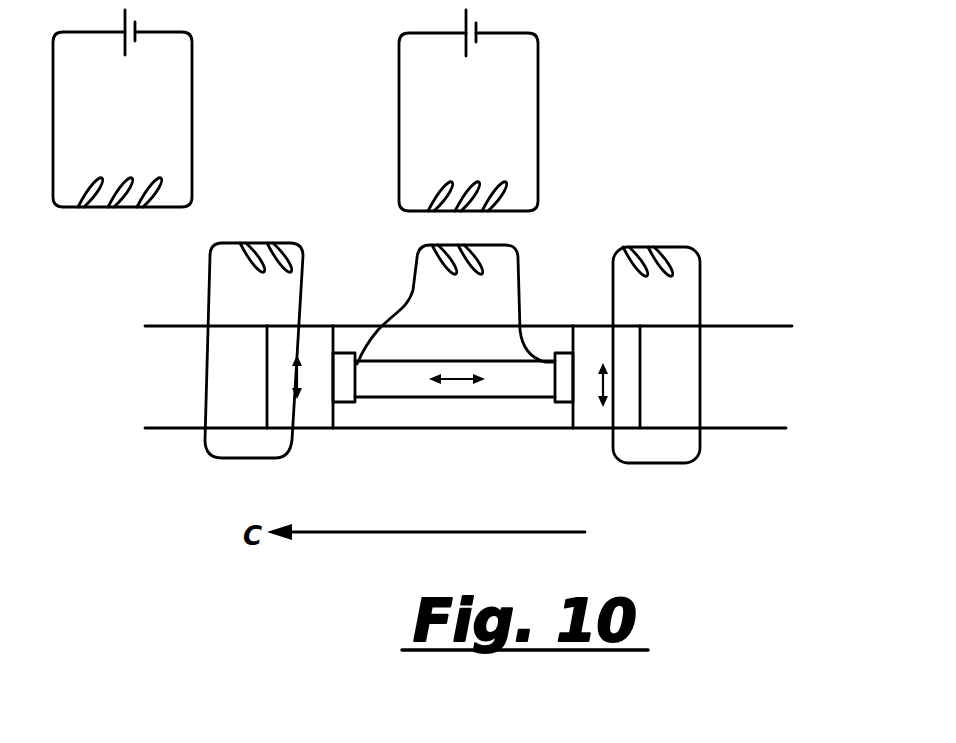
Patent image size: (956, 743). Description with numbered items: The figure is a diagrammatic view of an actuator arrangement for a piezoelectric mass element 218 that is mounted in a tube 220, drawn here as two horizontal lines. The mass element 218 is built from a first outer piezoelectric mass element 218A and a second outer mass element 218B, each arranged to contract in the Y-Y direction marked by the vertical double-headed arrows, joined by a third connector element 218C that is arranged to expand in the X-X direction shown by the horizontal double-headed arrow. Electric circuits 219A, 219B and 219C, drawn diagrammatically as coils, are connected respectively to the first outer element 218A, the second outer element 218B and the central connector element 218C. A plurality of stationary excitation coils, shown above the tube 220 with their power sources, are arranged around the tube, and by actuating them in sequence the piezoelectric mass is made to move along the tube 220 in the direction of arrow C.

The tube 220 is at (755, 322).
The electric circuit 219A is at (223, 251).
The electric circuit 219B is at (690, 250).
The electric circuit 219C is at (520, 270).
The mass element 218 is at (515, 400).
The first outer piezoelectric mass element 218A is at (316, 340).
The second outer mass element 218B is at (588, 424).
The third connector element 218C is at (393, 392).